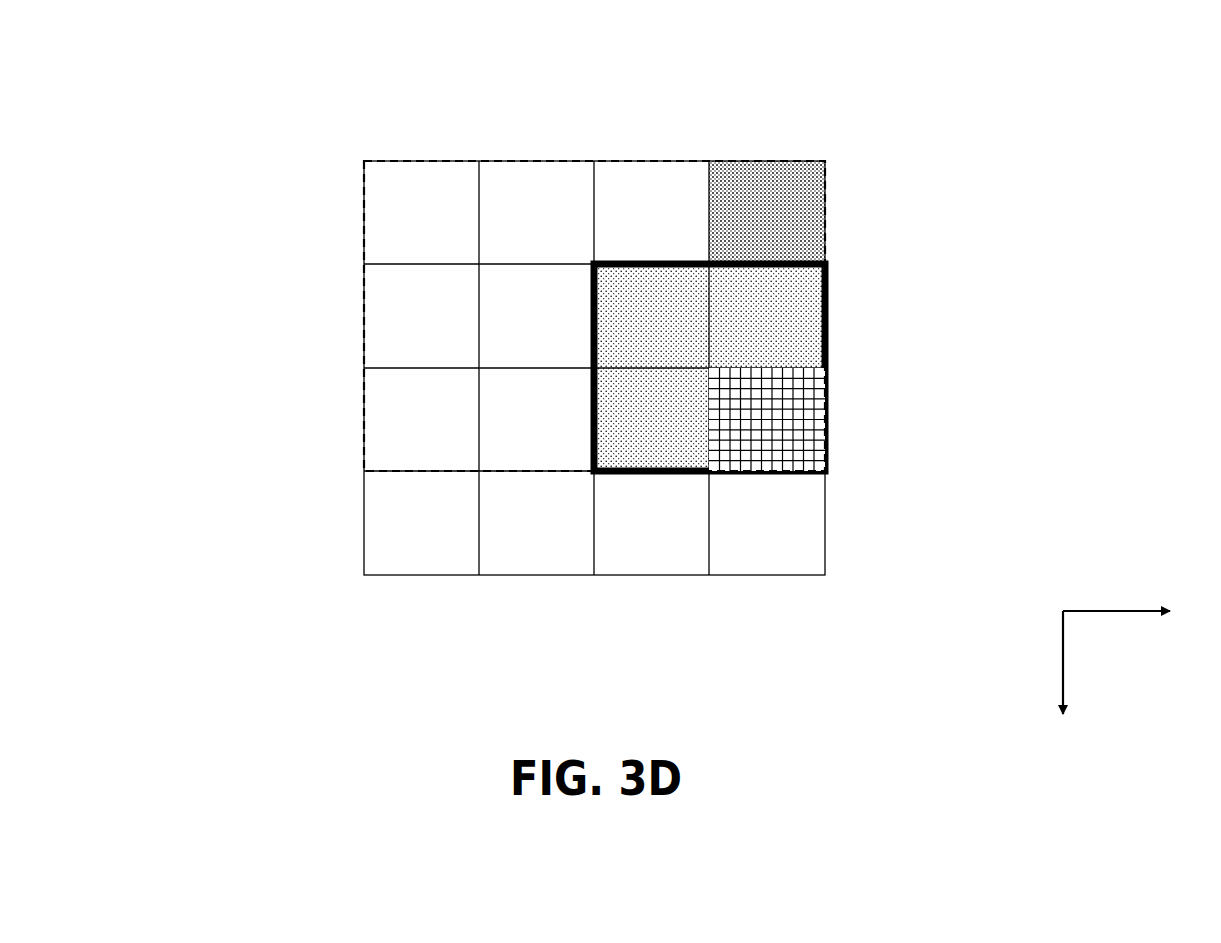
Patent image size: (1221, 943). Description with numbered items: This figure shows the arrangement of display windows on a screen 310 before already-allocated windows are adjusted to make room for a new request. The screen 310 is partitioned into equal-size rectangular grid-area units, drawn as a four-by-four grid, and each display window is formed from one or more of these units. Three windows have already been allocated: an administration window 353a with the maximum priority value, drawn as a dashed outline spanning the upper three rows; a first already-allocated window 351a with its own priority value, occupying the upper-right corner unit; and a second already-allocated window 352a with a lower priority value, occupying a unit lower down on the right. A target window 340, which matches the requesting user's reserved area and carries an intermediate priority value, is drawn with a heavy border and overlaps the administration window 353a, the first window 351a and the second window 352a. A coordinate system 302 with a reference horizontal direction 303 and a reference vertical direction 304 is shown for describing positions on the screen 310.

The screen 310 is at (936, 46).
The Window-1 351a is at (792, 170).
The target window 340 is at (784, 334).
The Window-2 352a is at (784, 411).
The administration window 353a is at (399, 168).
The coordinate system 302 is at (1084, 623).
The reference horizontal direction 303 is at (1100, 611).
The reference vertical direction 304 is at (1062, 655).